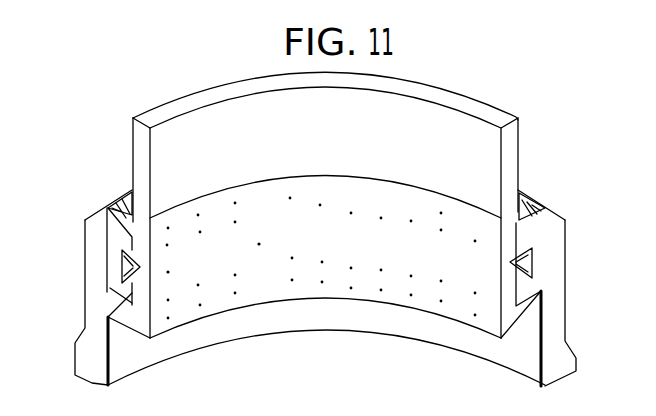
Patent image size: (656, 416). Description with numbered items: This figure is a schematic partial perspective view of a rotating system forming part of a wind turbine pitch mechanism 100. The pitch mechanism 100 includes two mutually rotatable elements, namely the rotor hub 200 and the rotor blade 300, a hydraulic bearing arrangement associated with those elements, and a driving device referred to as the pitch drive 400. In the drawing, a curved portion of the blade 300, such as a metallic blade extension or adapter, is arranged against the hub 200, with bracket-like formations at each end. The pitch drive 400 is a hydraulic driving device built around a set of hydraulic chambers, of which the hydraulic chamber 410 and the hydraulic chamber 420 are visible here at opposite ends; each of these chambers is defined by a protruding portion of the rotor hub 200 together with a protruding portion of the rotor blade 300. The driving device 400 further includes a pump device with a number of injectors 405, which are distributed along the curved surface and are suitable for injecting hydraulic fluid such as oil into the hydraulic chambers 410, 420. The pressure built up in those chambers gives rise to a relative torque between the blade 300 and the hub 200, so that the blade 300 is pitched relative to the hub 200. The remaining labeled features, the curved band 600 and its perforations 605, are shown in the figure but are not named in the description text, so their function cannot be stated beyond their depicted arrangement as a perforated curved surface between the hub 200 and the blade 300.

The pitch mechanism 100 is at (68, 103).
The rotor hub 200 is at (85, 219).
The rotor blade 300 is at (192, 100).
The pitch drive 400 is at (257, 234).
The injectors 405 is at (259, 246).
The hydraulic chamber 410 is at (116, 265).
The hydraulic chamber 420 is at (541, 257).
The perforated curved band 600 is at (326, 184).
The perforations 605 is at (466, 197).